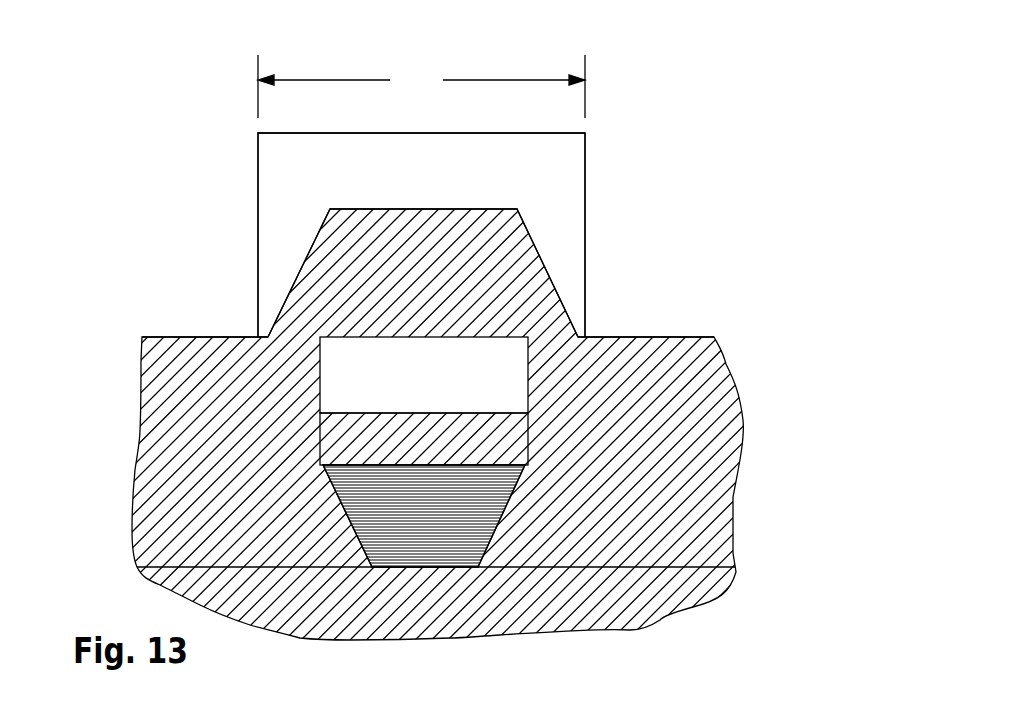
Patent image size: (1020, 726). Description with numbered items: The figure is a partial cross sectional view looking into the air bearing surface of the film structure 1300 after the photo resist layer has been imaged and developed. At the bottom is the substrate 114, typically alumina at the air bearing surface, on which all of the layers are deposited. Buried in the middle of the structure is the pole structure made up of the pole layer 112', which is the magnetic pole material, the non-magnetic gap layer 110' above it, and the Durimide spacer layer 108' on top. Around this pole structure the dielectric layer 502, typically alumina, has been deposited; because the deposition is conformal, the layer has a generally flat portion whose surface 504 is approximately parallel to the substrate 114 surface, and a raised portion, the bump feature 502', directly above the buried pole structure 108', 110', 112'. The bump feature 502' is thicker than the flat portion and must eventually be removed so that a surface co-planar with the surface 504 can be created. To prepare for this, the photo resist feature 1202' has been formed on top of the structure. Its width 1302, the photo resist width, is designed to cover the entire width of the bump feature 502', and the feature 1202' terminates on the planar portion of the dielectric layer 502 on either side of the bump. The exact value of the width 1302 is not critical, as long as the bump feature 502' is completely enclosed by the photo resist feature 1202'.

The film structure 1300 is at (635, 117).
The width of photo resist feature 1302 is at (437, 70).
The photo resist feature 1202' is at (421, 235).
The bump feature 502' is at (423, 273).
The dielectric layer 502 is at (510, 400).
The surface of dielectric layer 504 is at (197, 335).
The spacer layer of pole structure 108' is at (424, 375).
The gap layer of pole structure 110' is at (424, 439).
The pole layer of pole structure 112' is at (425, 516).
The substrate 114 is at (425, 621).